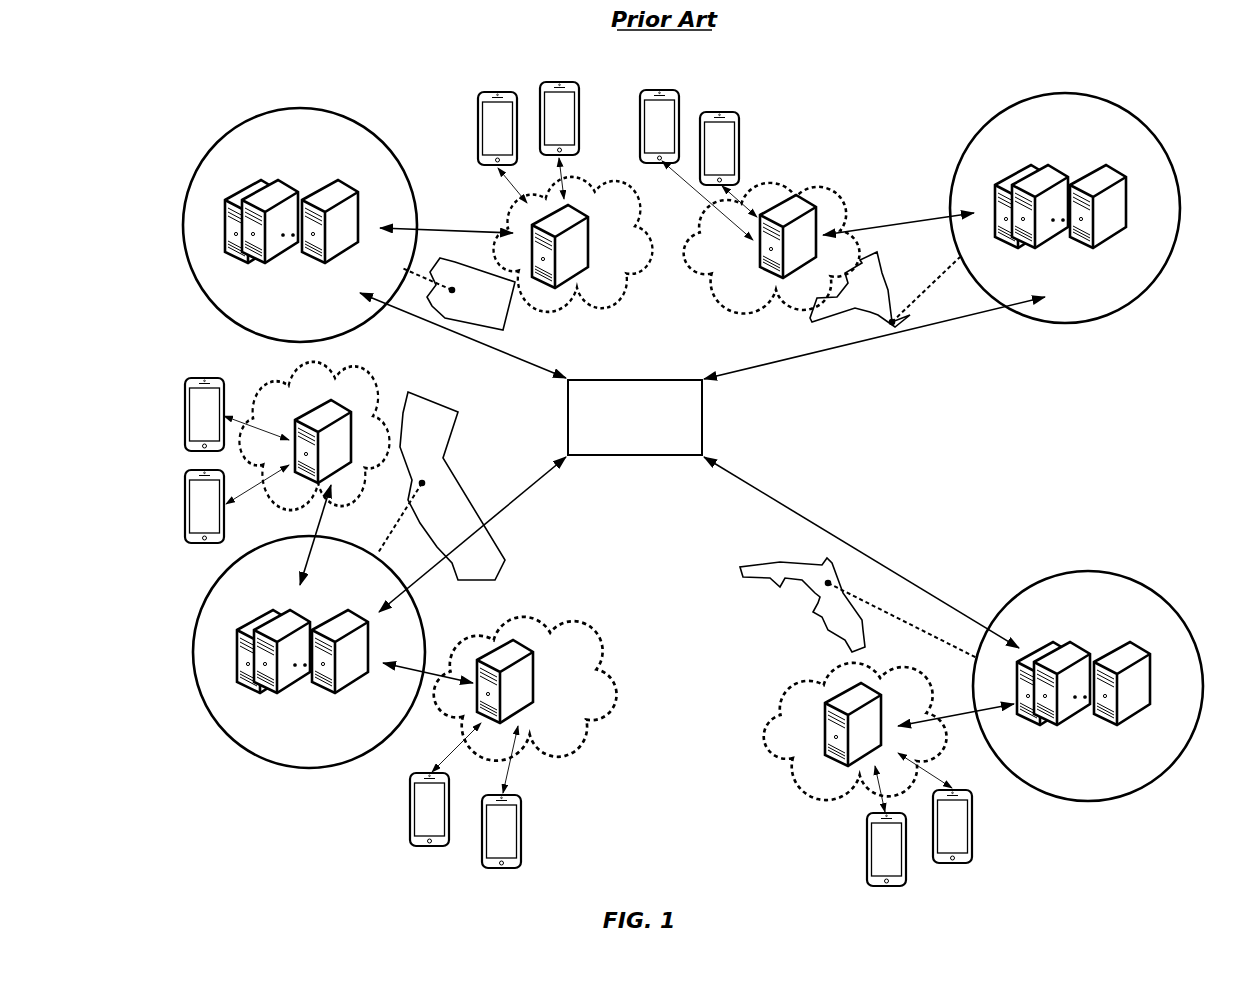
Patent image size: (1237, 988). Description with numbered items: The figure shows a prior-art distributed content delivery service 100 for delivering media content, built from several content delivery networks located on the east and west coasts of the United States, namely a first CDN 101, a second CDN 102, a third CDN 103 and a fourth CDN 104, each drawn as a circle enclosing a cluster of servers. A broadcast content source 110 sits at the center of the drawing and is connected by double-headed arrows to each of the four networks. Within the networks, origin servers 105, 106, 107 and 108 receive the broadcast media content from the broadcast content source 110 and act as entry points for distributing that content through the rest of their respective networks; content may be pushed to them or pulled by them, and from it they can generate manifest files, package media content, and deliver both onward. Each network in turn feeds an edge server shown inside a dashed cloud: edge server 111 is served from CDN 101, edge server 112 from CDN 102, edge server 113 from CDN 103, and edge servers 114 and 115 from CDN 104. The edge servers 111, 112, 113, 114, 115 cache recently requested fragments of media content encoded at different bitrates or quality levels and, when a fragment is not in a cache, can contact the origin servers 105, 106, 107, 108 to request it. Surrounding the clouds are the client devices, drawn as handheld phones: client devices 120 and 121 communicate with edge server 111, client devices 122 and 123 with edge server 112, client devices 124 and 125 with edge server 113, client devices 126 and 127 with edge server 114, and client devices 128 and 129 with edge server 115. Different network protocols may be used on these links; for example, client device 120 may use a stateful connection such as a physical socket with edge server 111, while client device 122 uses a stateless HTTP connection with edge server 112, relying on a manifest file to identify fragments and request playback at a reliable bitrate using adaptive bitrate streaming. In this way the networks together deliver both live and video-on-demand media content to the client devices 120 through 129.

The distributed content delivery service 100 is at (868, 112).
The CDN 101 is at (1049, 156).
The CDN 102 is at (1072, 775).
The CDN 103 is at (293, 742).
The CDN 104 is at (284, 181).
The origin server 105 is at (1078, 262).
The origin server 106 is at (1108, 640).
The origin server 107 is at (320, 606).
The origin server 108 is at (284, 283).
The broadcast content source 110 is at (622, 445).
The edge server 111 is at (762, 257).
The edge server 112 is at (828, 742).
The edge server 113 is at (536, 683).
The edge server 114 is at (313, 409).
The edge server 115 is at (590, 254).
The client device 120 is at (660, 90).
The client device 121 is at (719, 112).
The client device 122 is at (952, 863).
The client device 123 is at (887, 886).
The client device 124 is at (502, 866).
The client device 125 is at (428, 845).
The client device 126 is at (190, 470).
The client device 127 is at (203, 378).
The client device 128 is at (478, 95).
The client device 129 is at (557, 83).